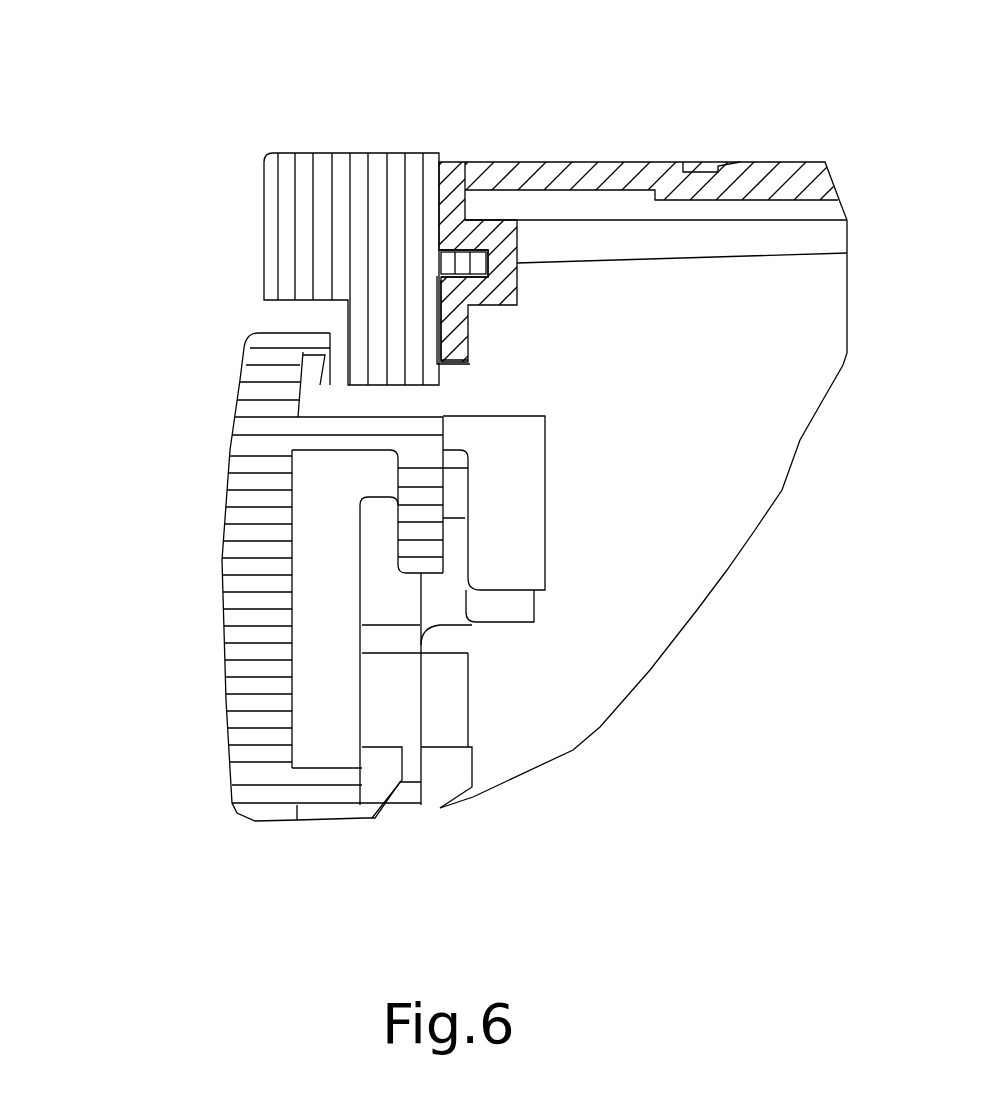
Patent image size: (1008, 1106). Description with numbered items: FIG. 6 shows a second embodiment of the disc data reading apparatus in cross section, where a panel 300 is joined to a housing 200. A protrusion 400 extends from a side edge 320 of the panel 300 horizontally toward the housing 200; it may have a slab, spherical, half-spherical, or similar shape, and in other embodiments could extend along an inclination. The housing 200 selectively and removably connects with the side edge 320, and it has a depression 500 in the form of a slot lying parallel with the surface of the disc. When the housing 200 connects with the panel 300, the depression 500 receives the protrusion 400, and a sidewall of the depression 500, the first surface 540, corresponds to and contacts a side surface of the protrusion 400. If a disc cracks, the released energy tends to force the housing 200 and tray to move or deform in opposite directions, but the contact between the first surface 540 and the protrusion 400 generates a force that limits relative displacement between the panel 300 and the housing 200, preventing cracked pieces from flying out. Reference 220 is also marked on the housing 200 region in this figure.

The housing 200 is at (670, 178).
The frame mounting portion 220 is at (473, 182).
The panel 300 is at (287, 216).
The side edge 320 is at (437, 332).
The protrusion 400 is at (462, 250).
The depression 500 is at (472, 247).
The first surface 540 is at (438, 282).